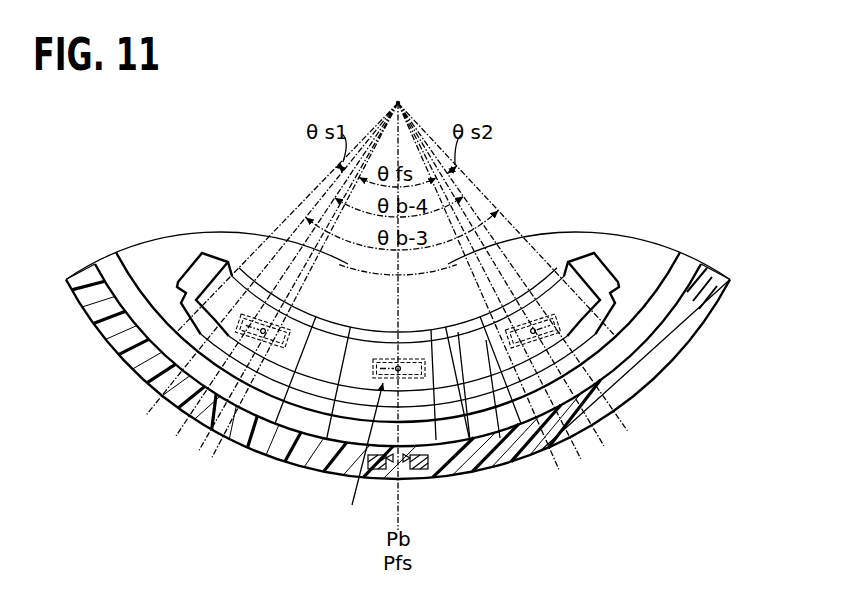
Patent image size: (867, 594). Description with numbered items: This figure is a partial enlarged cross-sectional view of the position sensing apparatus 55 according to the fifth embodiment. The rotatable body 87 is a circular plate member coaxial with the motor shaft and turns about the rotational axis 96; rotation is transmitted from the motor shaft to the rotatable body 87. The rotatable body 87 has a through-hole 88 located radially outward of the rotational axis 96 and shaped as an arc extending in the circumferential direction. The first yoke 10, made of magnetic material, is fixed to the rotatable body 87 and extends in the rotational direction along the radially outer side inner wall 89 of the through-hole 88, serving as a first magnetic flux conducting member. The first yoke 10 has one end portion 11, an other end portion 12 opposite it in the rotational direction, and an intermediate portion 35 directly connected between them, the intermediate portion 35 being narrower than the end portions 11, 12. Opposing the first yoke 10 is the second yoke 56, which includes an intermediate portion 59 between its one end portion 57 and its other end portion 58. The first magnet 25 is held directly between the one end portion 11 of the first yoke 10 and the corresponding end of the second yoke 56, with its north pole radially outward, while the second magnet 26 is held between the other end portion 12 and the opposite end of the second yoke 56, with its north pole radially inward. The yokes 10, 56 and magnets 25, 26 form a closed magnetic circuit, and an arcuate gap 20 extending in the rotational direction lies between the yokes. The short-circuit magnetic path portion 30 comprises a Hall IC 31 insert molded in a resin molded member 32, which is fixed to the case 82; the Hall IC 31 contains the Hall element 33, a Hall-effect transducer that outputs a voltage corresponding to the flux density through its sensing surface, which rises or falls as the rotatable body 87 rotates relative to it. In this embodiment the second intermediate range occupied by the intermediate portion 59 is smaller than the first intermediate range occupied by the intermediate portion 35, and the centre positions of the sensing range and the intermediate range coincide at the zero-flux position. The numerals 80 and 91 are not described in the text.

The rotational axis 96 is at (403, 103).
The rotor 80 is at (88, 318).
The case 82 is at (684, 344).
The one end portion of the first yoke 11 is at (150, 252).
The other end portion of the first yoke 12 is at (622, 270).
The rotatable body 87 is at (133, 262).
The through-hole 88 is at (597, 360).
The first yoke 10 is at (276, 420).
The gap 20 is at (326, 425).
The Hall element 33 is at (342, 430).
The intermediate portion 35 is at (232, 352).
The inner wall 89 is at (262, 383).
The short-circuit magnetic path portion 30 is at (214, 362).
The Hall IC 31 is at (438, 442).
The molded member 32 is at (471, 442).
The slot 91 is at (501, 440).
The one end portion of the second yoke 57 is at (216, 266).
The first magnet 25 is at (186, 272).
The other end portion of the second yoke 58 is at (581, 268).
The second magnet 26 is at (601, 275).
The second yoke 56 is at (333, 395).
The position sensing apparatus 55 is at (192, 330).
The intermediate portion of the second yoke 59 is at (534, 348).